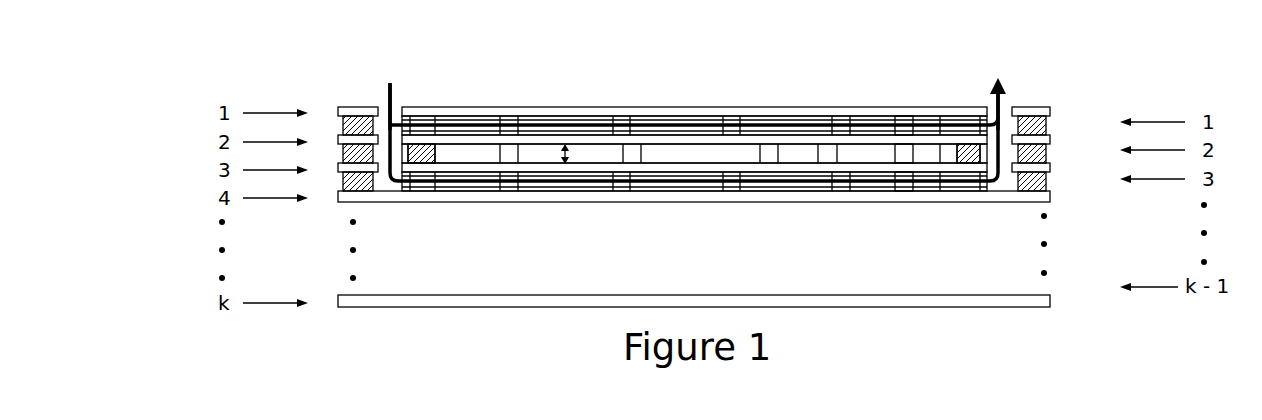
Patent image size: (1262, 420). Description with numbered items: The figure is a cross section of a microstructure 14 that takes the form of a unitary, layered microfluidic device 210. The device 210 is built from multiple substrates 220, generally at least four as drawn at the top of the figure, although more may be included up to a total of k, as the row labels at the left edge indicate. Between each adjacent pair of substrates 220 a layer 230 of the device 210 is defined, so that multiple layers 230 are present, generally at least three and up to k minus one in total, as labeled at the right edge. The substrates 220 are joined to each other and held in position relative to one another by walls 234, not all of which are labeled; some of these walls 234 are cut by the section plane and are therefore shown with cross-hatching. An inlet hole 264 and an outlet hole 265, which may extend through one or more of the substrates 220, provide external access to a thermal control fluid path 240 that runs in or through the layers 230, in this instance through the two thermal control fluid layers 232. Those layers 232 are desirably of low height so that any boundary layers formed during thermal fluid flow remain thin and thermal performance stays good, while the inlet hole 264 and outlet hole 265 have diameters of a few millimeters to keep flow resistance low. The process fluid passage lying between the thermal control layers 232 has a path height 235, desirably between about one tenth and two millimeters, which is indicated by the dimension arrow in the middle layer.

The microstructure 14 is at (714, 199).
The layered microfluidic device 210 is at (714, 174).
The substrates 220 is at (1050, 196).
The layers 230 is at (687, 175).
The thermal control fluid layers 232 is at (787, 175).
The walls 234 is at (345, 182).
The path height 235 is at (562, 153).
The thermal control fluid path 240 is at (695, 111).
The inlet hole 264 is at (381, 90).
The outlet hole 265 is at (1008, 93).